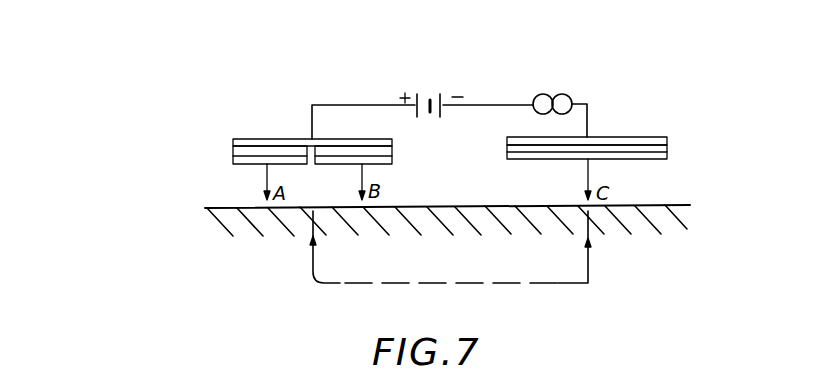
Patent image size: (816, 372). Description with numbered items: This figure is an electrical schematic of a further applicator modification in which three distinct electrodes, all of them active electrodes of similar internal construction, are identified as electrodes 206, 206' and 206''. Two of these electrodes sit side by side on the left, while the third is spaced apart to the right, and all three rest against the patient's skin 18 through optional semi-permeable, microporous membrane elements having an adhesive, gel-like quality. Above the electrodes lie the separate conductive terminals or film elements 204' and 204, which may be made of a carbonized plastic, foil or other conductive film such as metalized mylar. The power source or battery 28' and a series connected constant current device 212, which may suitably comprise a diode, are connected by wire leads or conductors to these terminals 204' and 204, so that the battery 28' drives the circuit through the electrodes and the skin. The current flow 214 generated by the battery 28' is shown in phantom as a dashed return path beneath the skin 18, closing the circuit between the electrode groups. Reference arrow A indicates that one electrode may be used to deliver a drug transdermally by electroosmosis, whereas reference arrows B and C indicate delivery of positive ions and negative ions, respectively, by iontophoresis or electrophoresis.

The skin 18 is at (690, 205).
The battery 28' is at (431, 84).
The conductive terminal 204' is at (301, 128).
The conductive terminal 204 is at (587, 122).
The active electrode 206' is at (241, 158).
The active electrode 206'' is at (385, 150).
The active electrode 206 is at (620, 151).
The constant current device 212 is at (558, 96).
The current flow 214 is at (544, 283).